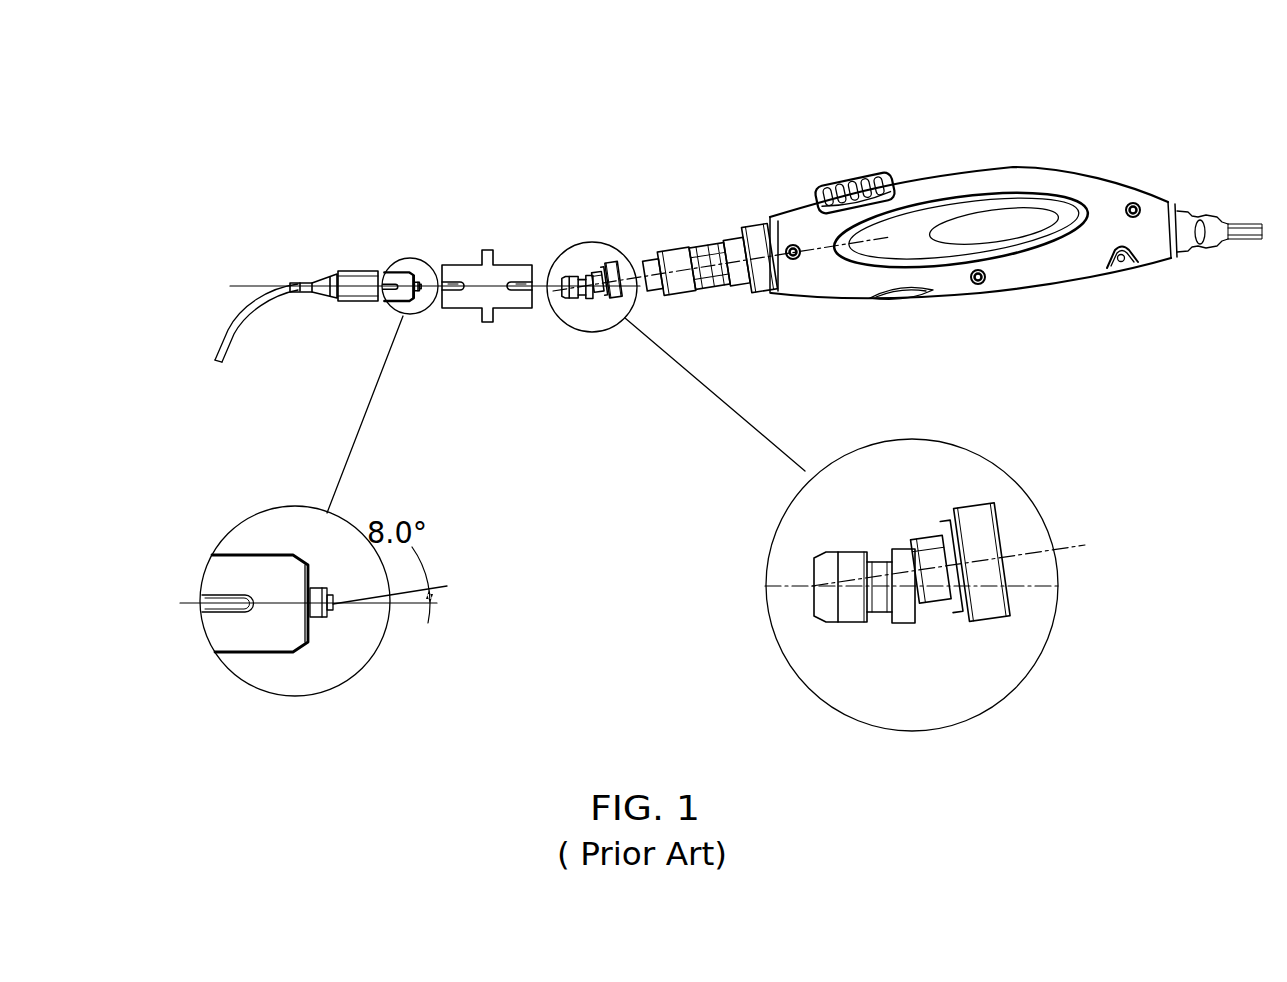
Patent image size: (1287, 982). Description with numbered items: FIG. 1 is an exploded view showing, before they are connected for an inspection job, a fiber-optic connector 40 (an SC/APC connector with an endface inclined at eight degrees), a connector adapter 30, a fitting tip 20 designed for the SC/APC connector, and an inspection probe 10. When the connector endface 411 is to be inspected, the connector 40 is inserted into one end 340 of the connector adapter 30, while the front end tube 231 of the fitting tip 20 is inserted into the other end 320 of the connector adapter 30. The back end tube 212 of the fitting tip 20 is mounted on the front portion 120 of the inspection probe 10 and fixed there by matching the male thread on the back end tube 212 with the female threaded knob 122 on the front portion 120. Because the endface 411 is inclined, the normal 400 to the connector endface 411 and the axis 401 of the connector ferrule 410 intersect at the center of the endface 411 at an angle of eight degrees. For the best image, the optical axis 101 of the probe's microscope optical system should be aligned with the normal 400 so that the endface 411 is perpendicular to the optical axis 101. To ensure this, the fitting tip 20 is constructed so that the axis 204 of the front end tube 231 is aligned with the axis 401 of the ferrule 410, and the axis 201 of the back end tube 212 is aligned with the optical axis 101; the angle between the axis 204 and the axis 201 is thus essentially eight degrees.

The inspection probe 10 is at (893, 157).
The optical axis 101 is at (760, 222).
The front portion 120 is at (660, 297).
The female threaded knob 122 is at (678, 248).
The fitting tip 20 is at (587, 246).
The axis of the back end tube 201 is at (1075, 542).
The axis of the front end tube 204 is at (775, 578).
The back end tube 212 is at (978, 515).
The front end tube 231 is at (850, 612).
The connector adapter 30 is at (485, 232).
The other end of the connector adapter 320 is at (553, 318).
The one end of the connector adapter 340 is at (432, 318).
The fiber-optic connector 40 is at (360, 262).
The normal to the connector endface 400 is at (437, 587).
The axis of the connector ferrule 401 is at (255, 287).
The connector ferrule 410 is at (313, 610).
The connector endface 411 is at (318, 607).